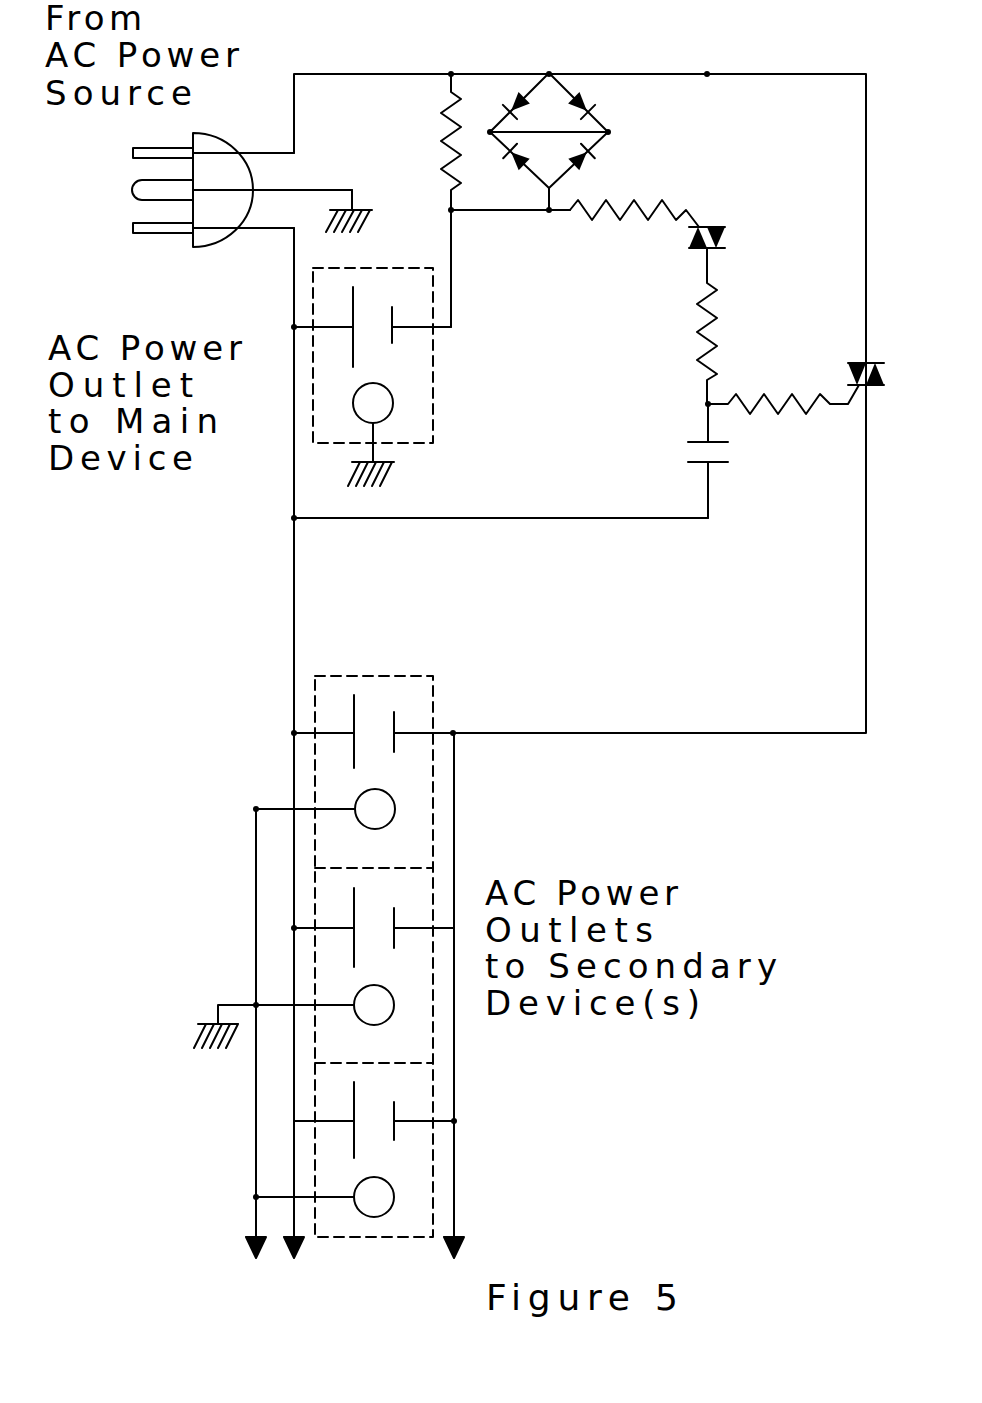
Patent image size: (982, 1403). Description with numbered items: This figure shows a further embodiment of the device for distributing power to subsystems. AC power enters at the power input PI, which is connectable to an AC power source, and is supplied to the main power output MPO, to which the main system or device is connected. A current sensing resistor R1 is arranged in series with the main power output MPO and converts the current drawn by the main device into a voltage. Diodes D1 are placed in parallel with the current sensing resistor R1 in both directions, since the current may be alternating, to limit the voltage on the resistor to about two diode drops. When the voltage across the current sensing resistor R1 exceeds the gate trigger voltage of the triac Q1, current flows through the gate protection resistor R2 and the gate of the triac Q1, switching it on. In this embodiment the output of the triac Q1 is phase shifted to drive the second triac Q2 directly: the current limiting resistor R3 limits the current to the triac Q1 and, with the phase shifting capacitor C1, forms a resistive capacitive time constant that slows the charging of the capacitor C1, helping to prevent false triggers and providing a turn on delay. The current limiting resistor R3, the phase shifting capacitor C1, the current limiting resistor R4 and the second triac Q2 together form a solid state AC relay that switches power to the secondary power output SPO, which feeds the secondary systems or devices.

The power input PI is at (208, 190).
The current sensing resistor R1 is at (420, 200).
The diodes D1 is at (554, 141).
The gate protection resistor R2 is at (634, 234).
The triac Q1 is at (733, 245).
The current limiting resistor R3 is at (678, 326).
The current limiting resistor R4 is at (783, 423).
The phase shifting capacitor C1 is at (681, 461).
The second triac Q2 is at (885, 393).
The main power output MPO is at (403, 355).
The secondary power output SPO is at (406, 956).